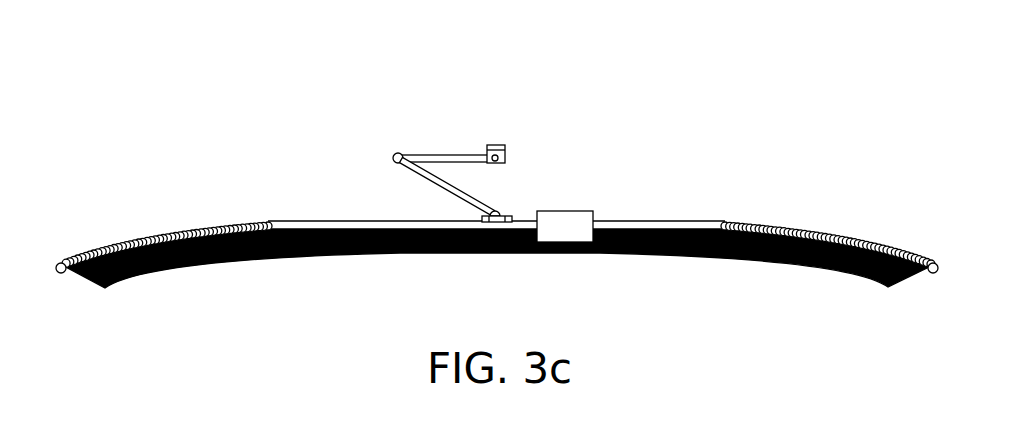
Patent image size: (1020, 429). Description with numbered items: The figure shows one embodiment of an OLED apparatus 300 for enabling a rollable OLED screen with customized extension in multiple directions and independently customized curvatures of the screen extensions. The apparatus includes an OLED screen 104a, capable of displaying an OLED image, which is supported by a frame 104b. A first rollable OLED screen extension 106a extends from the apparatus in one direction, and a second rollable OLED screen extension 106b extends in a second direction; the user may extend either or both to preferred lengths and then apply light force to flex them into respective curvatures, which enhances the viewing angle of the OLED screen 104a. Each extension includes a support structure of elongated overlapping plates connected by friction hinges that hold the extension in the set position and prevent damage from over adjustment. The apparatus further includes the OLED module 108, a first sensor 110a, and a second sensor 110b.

The OLED apparatus 300 is at (152, 67).
The OLED screen 104a is at (766, 268).
The frame 104b is at (637, 211).
The first rollable OLED screen extension 106a is at (934, 251).
The second rollable OLED screen extension 106b is at (61, 251).
The OLED module 108 is at (565, 226).
The first sensor 110a is at (725, 211).
The second sensor 110b is at (272, 211).